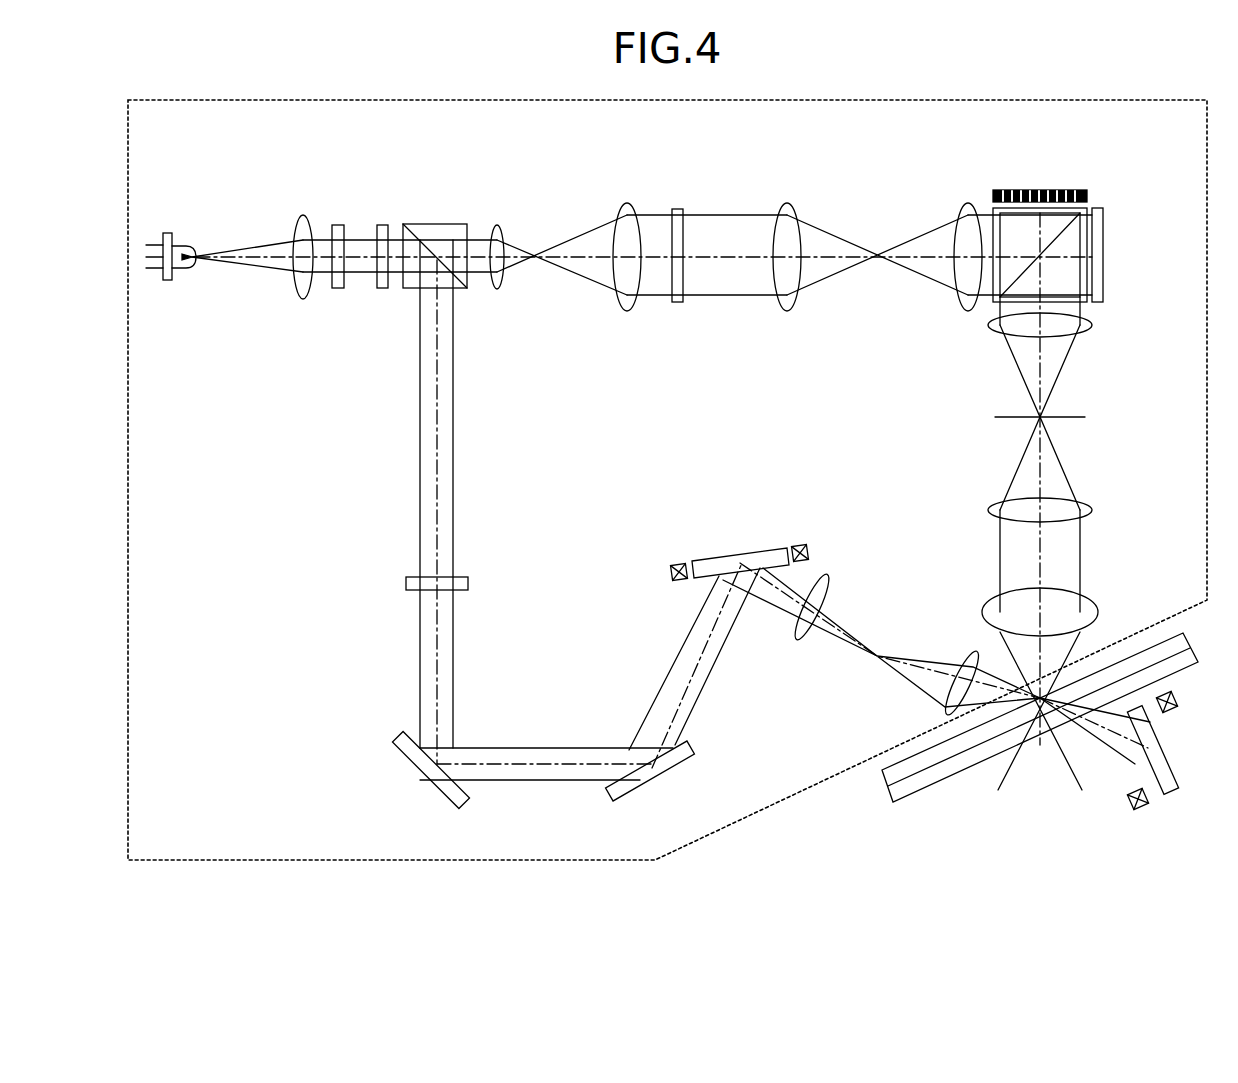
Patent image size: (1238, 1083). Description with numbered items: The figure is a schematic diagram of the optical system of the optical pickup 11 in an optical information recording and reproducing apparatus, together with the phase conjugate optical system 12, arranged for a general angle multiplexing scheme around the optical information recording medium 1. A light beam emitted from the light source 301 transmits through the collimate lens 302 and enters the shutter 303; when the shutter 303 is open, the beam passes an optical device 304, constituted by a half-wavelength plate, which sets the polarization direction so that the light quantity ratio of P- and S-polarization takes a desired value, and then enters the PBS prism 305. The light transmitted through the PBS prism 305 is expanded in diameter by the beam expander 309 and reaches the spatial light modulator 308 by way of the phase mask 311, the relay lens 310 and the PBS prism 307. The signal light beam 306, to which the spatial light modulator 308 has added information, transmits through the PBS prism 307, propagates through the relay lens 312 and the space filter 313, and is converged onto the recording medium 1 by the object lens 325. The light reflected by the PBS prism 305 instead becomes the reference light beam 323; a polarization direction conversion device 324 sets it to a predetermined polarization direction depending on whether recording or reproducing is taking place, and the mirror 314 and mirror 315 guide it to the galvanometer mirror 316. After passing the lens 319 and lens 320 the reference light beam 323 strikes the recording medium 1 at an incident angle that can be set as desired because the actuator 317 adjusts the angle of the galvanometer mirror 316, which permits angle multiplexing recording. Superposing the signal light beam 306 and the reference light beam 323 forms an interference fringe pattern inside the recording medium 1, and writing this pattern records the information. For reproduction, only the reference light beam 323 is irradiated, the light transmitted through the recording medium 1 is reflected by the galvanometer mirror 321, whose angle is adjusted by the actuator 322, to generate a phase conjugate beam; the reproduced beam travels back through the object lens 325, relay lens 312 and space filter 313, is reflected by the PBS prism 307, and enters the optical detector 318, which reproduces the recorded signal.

The optical information recording medium 1 is at (927, 786).
The optical pickup 11 is at (235, 860).
The phase conjugate optical system 12 is at (1134, 798).
The light source 301 is at (185, 244).
The collimate lens 302 is at (303, 214).
The shutter 303 is at (338, 224).
The optical device 304 is at (383, 224).
The PBS prism 305 is at (437, 223).
The signal light beam 306 is at (724, 214).
The PBS prism 307 is at (1010, 233).
The spatial light modulator 308 is at (1038, 193).
The beam expander 309 is at (497, 193).
The relay lens 310 is at (968, 193).
The phase mask 311 is at (678, 303).
The relay lens 312 is at (973, 325).
The space filter 313 is at (1085, 417).
The mirror 314 is at (425, 777).
The mirror 315 is at (662, 777).
The galvanometer mirror 316 is at (742, 547).
The actuator 317 is at (670, 564).
The optical detector 318 is at (1102, 257).
The lens 319 is at (797, 637).
The lens 320 is at (964, 664).
The galvanometer mirror 321 is at (1163, 757).
The actuator 322 is at (1136, 810).
The reference light beam 323 is at (549, 747).
The polarization direction conversion device 324 is at (406, 583).
The object lens 325 is at (1088, 620).